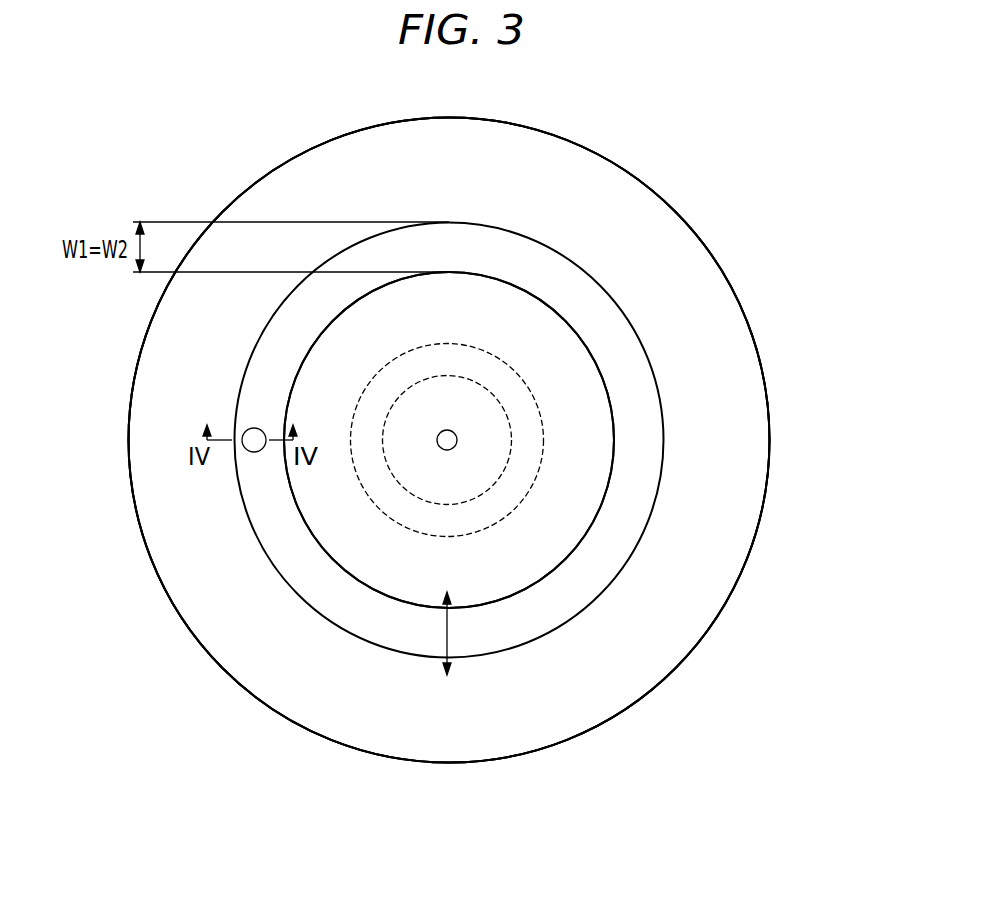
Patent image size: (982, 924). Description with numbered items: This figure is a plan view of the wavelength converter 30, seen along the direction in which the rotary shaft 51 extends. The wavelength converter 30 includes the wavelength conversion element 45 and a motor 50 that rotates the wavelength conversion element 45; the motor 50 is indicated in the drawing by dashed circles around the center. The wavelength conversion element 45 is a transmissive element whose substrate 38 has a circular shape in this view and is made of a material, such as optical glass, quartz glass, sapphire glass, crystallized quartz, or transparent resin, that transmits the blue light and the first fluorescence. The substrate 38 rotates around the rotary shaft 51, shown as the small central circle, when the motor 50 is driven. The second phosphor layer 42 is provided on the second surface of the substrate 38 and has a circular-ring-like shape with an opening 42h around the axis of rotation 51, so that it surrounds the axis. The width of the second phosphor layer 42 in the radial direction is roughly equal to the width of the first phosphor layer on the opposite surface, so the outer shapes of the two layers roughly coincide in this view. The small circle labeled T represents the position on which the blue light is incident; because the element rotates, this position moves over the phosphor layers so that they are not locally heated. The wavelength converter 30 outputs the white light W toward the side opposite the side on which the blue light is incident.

The wavelength converter 30 is at (258, 140).
The substrate 38 is at (503, 152).
The wavelength conversion element 45 is at (663, 150).
The second phosphor layer 42 is at (285, 552).
The opening 42h is at (473, 293).
The motor 50 is at (410, 537).
The rotary shaft 51 is at (447, 440).
The position on which the blue light is incident T is at (255, 428).
The white light W is at (448, 630).